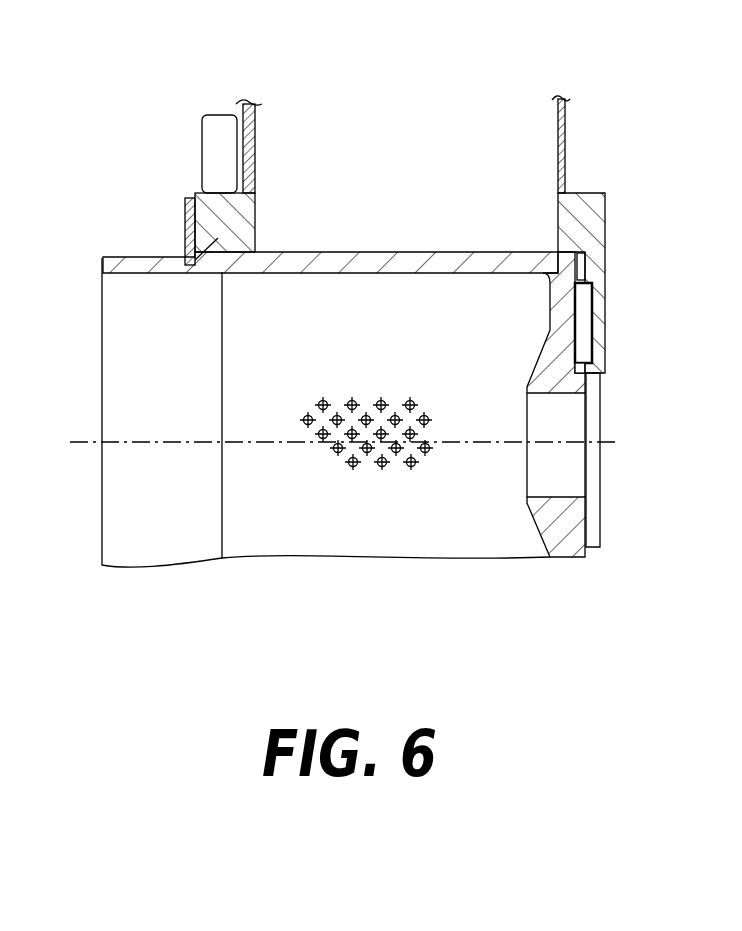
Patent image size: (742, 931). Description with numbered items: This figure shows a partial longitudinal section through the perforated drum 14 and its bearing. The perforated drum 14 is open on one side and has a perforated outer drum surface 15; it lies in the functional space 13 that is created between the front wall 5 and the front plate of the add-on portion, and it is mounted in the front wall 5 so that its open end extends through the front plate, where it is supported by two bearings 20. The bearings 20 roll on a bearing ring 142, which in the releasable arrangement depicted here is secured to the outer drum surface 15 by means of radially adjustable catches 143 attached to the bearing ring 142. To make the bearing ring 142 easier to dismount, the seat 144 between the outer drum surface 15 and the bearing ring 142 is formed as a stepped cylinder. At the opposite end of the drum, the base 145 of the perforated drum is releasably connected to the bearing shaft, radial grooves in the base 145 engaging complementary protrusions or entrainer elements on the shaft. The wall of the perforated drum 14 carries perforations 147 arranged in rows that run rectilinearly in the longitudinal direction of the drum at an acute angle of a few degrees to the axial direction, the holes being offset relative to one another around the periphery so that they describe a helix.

The front wall 5 is at (565, 135).
The functional space 13 is at (401, 149).
The perforated drum 14 is at (165, 532).
The perforated outer drum surface 15 is at (452, 253).
The bearings 20 is at (220, 127).
The bearing ring 142 is at (255, 223).
The radially adjustable catches 143 is at (185, 223).
The seat 144 is at (222, 272).
The base of the perforated drum 145 is at (553, 370).
The perforations 147 is at (383, 466).